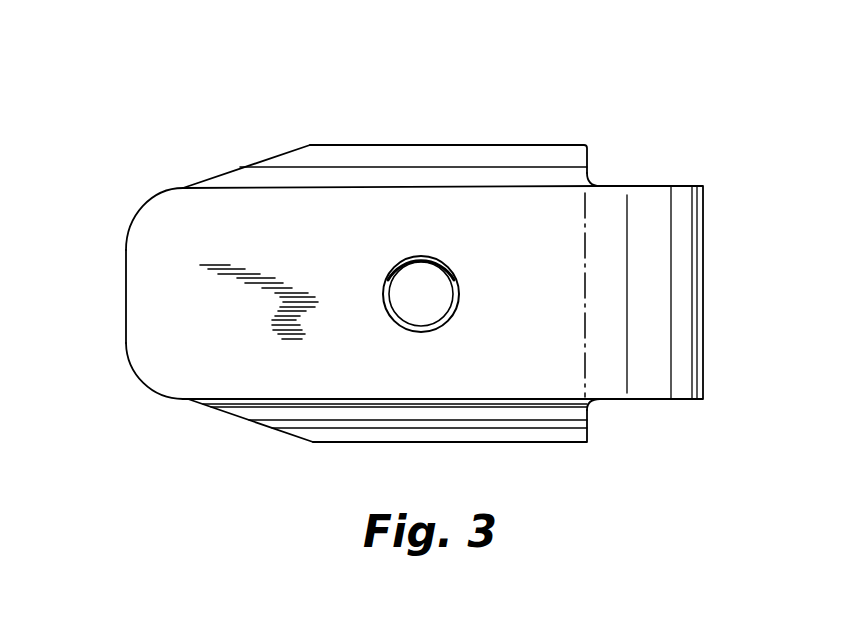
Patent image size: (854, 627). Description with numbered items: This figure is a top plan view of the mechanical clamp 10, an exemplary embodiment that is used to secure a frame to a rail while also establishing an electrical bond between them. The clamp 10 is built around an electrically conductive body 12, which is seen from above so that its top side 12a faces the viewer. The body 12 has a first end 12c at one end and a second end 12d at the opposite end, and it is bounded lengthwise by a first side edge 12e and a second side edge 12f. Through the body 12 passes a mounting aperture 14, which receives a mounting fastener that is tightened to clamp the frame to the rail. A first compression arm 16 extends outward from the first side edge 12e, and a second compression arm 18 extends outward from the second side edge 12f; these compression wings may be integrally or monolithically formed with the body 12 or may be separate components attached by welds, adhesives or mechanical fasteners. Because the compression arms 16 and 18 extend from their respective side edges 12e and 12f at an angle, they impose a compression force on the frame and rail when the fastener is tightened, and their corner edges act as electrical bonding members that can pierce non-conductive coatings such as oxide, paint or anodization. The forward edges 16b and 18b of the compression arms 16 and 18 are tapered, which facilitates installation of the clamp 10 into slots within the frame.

The clamp 10 is at (563, 92).
The electrically conductive body 12 is at (132, 380).
The top side 12a is at (155, 268).
The first end 12c is at (587, 245).
The second end 12d is at (126, 302).
The first side edge 12e is at (343, 187).
The second side edge 12f is at (322, 400).
The mounting aperture 14 is at (415, 285).
The first compression arm 16 is at (425, 140).
The forward edge of first compression arm 16b is at (223, 168).
The second compression arm 18 is at (551, 449).
The forward edge of second compression arm 18b is at (221, 415).